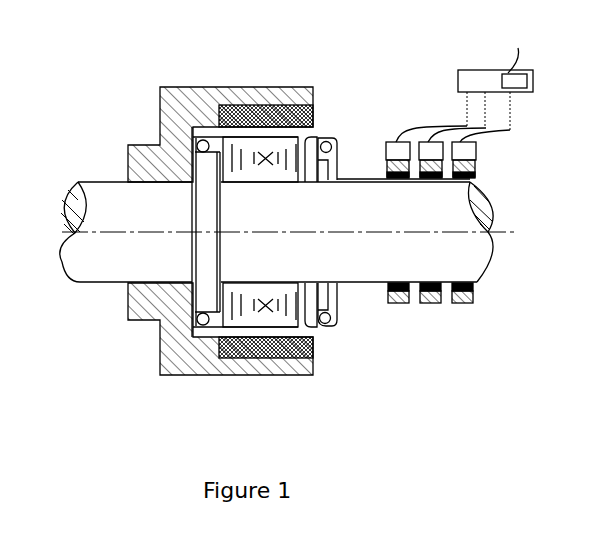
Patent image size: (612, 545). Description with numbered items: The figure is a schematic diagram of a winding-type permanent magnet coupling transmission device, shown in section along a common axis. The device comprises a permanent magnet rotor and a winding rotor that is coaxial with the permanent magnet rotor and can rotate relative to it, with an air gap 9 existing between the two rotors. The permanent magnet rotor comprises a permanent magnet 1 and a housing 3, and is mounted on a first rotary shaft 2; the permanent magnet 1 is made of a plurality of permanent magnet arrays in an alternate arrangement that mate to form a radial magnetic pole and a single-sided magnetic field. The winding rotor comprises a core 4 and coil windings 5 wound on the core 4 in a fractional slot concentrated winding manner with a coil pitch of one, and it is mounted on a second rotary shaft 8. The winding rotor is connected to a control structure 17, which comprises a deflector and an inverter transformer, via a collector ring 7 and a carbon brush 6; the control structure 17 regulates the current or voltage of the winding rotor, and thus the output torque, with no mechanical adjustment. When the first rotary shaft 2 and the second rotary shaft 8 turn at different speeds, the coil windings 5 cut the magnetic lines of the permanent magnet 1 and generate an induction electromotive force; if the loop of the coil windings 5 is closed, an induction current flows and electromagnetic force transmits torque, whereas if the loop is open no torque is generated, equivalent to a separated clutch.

The permanent magnet 1 is at (217, 347).
The first rotary shaft 2 is at (122, 195).
The housing 3 is at (177, 127).
The core 4 is at (313, 128).
The coil winding 5 is at (337, 138).
The carbon brush 6 is at (467, 128).
The collector ring 7 is at (453, 304).
The second rotary shaft 8 is at (355, 256).
The air gap 9 is at (307, 332).
The control structure 17 is at (502, 64).